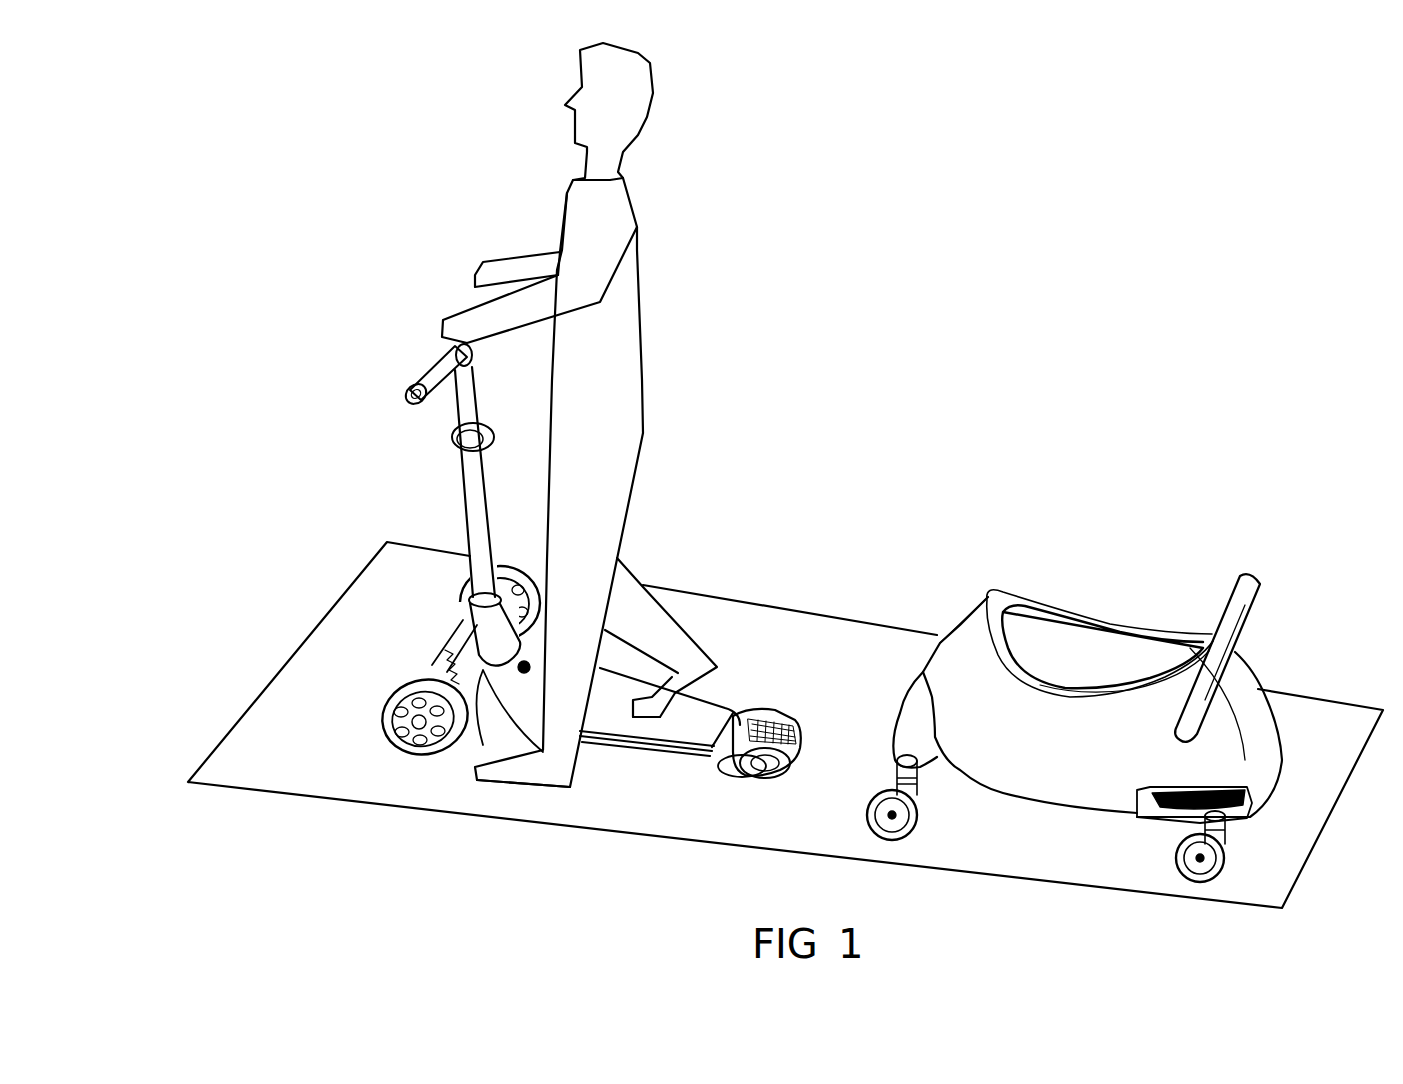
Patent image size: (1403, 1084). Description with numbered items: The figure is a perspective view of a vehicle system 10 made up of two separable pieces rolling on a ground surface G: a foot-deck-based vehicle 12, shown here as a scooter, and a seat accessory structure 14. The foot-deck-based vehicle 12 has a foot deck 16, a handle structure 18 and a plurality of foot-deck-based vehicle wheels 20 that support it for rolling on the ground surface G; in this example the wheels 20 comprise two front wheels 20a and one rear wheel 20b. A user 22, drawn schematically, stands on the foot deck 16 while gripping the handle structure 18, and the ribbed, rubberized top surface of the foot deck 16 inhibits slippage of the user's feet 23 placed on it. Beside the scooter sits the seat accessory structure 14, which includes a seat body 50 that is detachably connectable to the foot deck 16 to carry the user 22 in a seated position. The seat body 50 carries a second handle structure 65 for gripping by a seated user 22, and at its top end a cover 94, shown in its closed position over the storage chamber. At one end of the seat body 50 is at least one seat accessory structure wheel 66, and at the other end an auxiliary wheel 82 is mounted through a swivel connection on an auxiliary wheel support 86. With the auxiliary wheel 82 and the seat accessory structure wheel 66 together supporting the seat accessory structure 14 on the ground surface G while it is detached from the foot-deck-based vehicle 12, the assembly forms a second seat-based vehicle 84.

The vehicle system 10 is at (982, 207).
The foot-deck-based vehicle 12 is at (423, 457).
The seat accessory structure 14 is at (992, 597).
The foot deck 16 is at (653, 737).
The handle structure 18 is at (472, 527).
The foot-deck-based vehicle wheels 20 is at (459, 742).
The front wheel 20a is at (460, 583).
The rear wheel 20b is at (783, 780).
The user 22 is at (606, 460).
The user's feet 23 is at (510, 770).
The seat body 50 is at (1057, 773).
The second handle structure 65 is at (1247, 577).
The seat accessory structure wheel 66 is at (1200, 858).
The auxiliary wheel 82 is at (892, 815).
The seat-based vehicle 84 is at (1038, 573).
The auxiliary wheel support 86 is at (903, 733).
The cover 94 is at (1073, 632).
The ground surface G is at (795, 650).